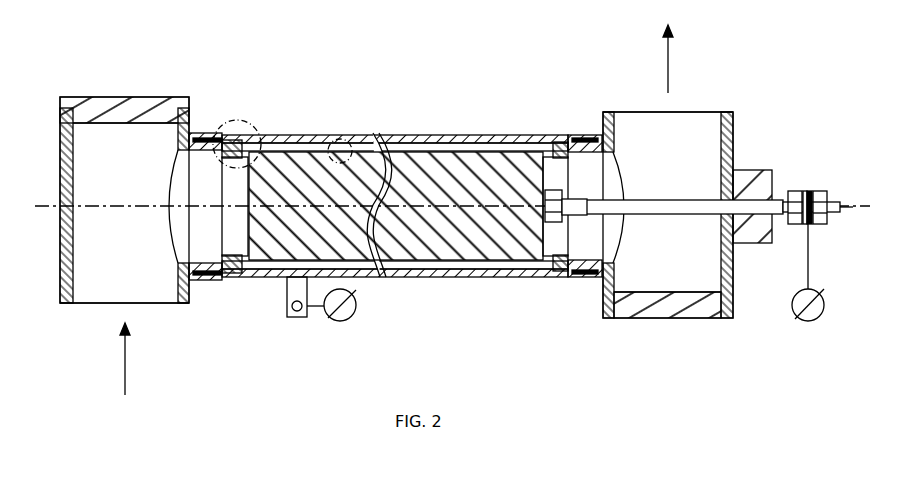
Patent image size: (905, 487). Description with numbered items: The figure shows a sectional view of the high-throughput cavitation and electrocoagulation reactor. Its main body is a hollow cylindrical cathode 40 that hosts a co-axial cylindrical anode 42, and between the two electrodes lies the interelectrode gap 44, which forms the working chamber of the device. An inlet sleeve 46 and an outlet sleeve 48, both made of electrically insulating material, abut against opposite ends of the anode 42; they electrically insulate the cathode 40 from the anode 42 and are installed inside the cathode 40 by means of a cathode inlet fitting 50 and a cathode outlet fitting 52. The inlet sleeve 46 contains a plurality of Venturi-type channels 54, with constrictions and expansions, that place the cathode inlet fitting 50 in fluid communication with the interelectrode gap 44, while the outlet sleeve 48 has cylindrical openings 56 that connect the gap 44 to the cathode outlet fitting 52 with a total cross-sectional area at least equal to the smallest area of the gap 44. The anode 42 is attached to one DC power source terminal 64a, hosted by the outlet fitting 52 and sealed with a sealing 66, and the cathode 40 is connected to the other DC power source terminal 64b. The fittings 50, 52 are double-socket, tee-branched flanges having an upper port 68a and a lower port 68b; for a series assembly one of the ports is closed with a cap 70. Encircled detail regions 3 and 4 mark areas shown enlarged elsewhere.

The detail circle 3 is at (346, 139).
The detail circle 4 is at (249, 120).
The hollow cylindrical cathode 40 is at (398, 134).
The cylindrical anode 42 is at (480, 259).
The interelectrode gap 44 is at (438, 149).
The inlet sleeve 46 is at (230, 276).
The outlet sleeve 48 is at (567, 278).
The cathode inlet fitting 50 is at (62, 172).
The cathode outlet fitting 52 is at (735, 141).
The channels 54 is at (243, 150).
The cylindrical openings 56 is at (553, 150).
The DC power source terminal 64a is at (590, 193).
The DC power source terminal 64b is at (298, 317).
The sealing 66 is at (767, 170).
The upper port 68a is at (131, 125).
The lower port 68b is at (110, 302).
The cap 70 is at (155, 96).